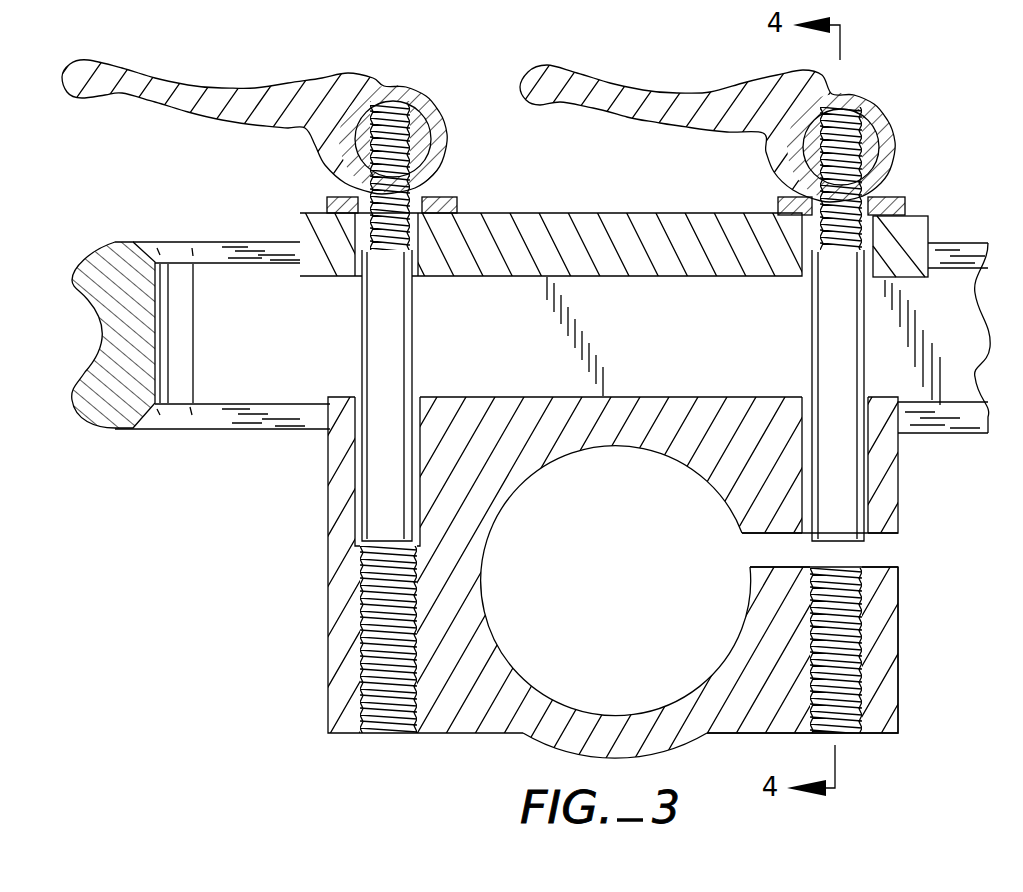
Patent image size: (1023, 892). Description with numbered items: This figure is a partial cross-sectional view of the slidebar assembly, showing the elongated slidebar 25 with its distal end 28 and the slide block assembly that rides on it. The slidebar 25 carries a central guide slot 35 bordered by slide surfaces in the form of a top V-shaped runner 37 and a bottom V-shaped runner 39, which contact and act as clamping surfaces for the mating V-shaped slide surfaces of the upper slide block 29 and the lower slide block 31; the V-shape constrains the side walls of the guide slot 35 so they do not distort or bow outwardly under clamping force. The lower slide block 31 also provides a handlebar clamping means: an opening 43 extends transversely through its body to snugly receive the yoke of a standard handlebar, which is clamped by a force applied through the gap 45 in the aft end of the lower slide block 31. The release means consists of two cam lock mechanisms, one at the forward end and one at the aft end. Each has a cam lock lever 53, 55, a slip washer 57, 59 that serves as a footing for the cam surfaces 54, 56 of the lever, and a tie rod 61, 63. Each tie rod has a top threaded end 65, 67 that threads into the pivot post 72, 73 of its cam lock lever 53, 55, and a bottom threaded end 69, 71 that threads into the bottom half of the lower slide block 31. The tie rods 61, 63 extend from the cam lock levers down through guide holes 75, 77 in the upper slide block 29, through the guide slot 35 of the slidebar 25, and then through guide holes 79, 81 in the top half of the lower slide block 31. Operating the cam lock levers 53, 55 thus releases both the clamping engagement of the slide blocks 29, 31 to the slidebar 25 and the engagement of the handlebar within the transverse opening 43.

The slidebar 25 is at (175, 440).
The distal end 28 is at (67, 310).
The upper slide block 29 is at (610, 222).
The lower slide block 31 is at (337, 593).
The central guide slot 35 is at (238, 323).
The top V-shaped runner 37 is at (254, 240).
The bottom V-shaped runner 39 is at (280, 424).
The opening 43 is at (522, 637).
The gap 45 is at (883, 557).
The cam lock lever 53 is at (290, 88).
The cam surface 54 is at (450, 150).
The cam lock lever 55 is at (706, 95).
The cam surface 56 is at (896, 150).
The slip washer 57 is at (440, 197).
The slip washer 59 is at (893, 198).
The tie rod 61 is at (375, 467).
The tie rod 63 is at (857, 472).
The top threaded end 65 is at (360, 265).
The top threaded end 67 is at (802, 257).
The bottom threaded end 69 is at (362, 620).
The bottom threaded end 71 is at (878, 672).
The pivot post 72 is at (428, 137).
The pivot post 73 is at (870, 127).
The guide hole 75 is at (426, 245).
The guide hole 77 is at (880, 240).
The guide hole 79 is at (360, 523).
The guide hole 81 is at (868, 520).